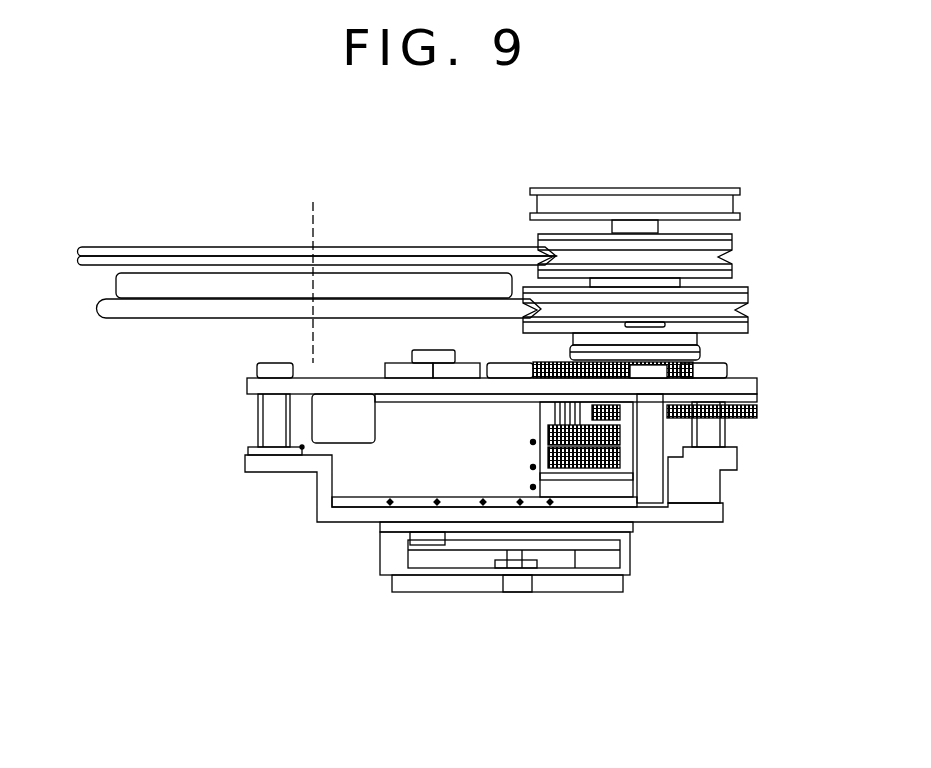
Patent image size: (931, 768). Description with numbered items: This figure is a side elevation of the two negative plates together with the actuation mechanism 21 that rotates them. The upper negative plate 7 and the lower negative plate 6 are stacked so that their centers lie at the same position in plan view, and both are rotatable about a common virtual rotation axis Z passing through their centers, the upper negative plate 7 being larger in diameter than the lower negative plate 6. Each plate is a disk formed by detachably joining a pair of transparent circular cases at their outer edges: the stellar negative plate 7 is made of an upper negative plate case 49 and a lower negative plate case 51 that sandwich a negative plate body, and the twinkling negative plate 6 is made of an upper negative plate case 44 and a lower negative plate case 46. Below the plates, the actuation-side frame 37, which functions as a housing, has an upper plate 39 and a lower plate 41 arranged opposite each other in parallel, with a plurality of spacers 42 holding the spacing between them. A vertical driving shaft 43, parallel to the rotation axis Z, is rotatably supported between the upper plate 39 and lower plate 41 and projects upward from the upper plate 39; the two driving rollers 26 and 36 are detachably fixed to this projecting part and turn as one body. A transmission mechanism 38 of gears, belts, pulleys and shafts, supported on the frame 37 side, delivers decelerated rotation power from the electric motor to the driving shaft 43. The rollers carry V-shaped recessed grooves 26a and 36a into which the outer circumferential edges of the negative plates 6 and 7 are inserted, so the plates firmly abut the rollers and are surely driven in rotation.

The upper negative plate 7 is at (303, 257).
The upper negative plate case 49 is at (112, 247).
The lower negative plate case 51 is at (100, 264).
The lower negative plate 6 is at (295, 340).
The lower negative plate case 46 is at (157, 319).
The upper negative plate case 44 is at (406, 272).
The driving shaft 43 is at (663, 232).
The driving roller 36 is at (671, 244).
The recessed groove 36a is at (723, 258).
The driving roller 26 is at (672, 336).
The recessed groove 26a is at (746, 306).
The upper plate 39 is at (245, 390).
The spacer 42 is at (258, 417).
The lower plate 41 is at (243, 458).
The actuation-side frame 37 is at (311, 486).
The transmission mechanism 38 is at (597, 460).
The actuation mechanism 21 is at (599, 597).
The rotation axis Z is at (314, 226).